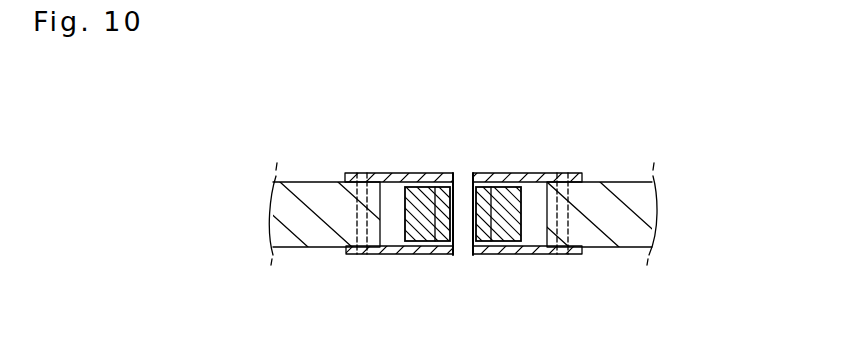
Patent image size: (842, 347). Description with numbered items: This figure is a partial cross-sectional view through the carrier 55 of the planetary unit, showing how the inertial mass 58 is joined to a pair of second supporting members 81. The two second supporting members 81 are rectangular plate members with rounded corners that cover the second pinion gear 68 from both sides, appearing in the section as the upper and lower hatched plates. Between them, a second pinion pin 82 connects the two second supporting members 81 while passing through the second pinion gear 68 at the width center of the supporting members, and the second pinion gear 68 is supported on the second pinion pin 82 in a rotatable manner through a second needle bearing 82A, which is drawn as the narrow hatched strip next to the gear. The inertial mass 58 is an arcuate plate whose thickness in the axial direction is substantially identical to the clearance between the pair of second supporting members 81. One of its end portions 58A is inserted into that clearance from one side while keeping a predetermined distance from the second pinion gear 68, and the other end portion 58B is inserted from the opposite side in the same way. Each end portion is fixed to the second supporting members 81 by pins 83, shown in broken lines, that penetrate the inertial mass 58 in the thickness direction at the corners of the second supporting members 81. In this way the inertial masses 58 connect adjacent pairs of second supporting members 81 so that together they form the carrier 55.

The carrier 55 is at (470, 138).
The inertial mass 58 is at (476, 214).
The end portion of the inertial mass 58A is at (625, 192).
The other end portion of the inertial mass 58B is at (310, 230).
The second pinion gear 68 is at (503, 230).
The second supporting member 81 is at (523, 173).
The second pinion pin 82 is at (462, 240).
The second needle bearing 82A is at (447, 232).
The pin 83 is at (363, 170).